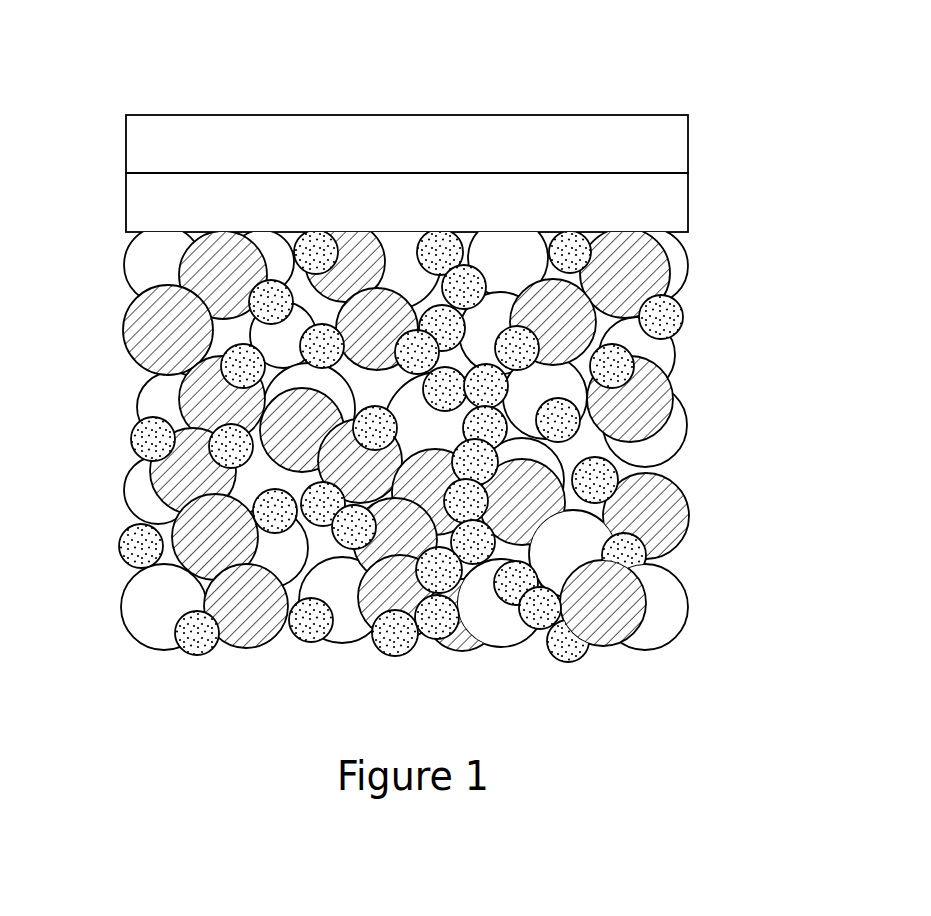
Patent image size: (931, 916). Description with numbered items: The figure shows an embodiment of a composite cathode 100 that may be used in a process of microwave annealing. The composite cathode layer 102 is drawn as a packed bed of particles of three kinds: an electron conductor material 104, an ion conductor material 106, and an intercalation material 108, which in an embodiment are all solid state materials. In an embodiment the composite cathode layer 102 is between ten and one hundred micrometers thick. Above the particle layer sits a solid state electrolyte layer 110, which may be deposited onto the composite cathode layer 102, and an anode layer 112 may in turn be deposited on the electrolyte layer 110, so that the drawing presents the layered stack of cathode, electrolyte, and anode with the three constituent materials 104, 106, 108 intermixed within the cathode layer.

The composite cathode 100 is at (644, 66).
The composite cathode layer 102 is at (75, 236).
The electron conductor material 104 is at (687, 267).
The ion conductor material 106 is at (315, 645).
The intercalation material 108 is at (145, 393).
The solid state electrolyte layer 110 is at (688, 198).
The anode layer 112 is at (688, 142).